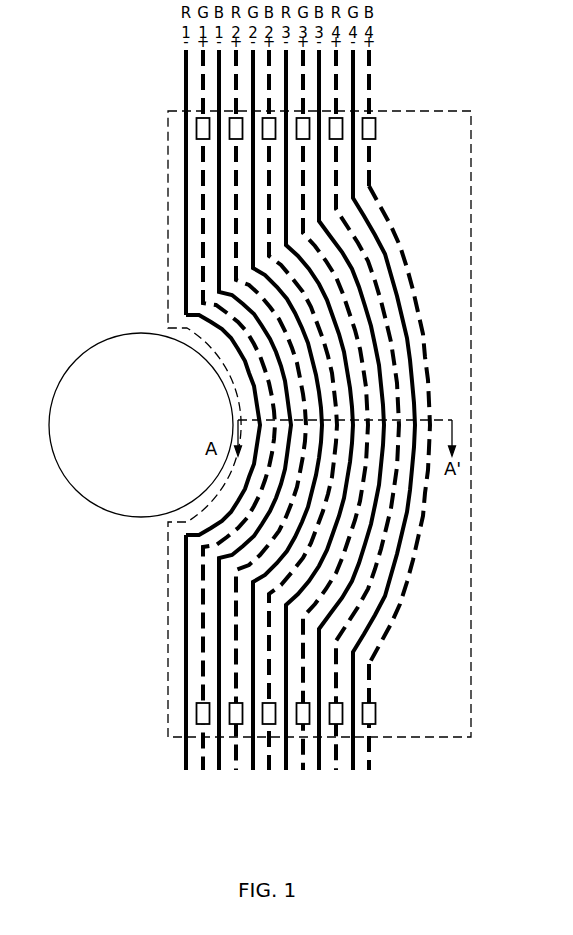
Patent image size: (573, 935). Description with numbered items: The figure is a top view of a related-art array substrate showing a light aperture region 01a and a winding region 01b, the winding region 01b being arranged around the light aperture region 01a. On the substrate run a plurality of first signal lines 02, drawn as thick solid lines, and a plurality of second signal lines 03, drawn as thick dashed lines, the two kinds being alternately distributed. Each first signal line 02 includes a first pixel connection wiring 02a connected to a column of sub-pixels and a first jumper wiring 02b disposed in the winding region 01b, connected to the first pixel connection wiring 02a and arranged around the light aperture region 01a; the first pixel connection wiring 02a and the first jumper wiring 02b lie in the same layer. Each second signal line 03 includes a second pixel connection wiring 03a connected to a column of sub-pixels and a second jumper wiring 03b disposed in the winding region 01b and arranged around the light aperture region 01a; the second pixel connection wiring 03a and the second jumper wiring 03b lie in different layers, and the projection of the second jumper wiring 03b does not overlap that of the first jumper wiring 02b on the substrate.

The light aperture region 01a is at (131, 404).
The winding region 01b is at (350, 393).
The first signal lines 02 is at (253, 433).
The first pixel connection wiring 02a is at (139, 178).
The first jumper wiring 02b is at (208, 425).
The second signal lines 03 is at (321, 426).
The second pixel connection wiring 03a is at (400, 106).
The second jumper wiring 03b is at (406, 425).